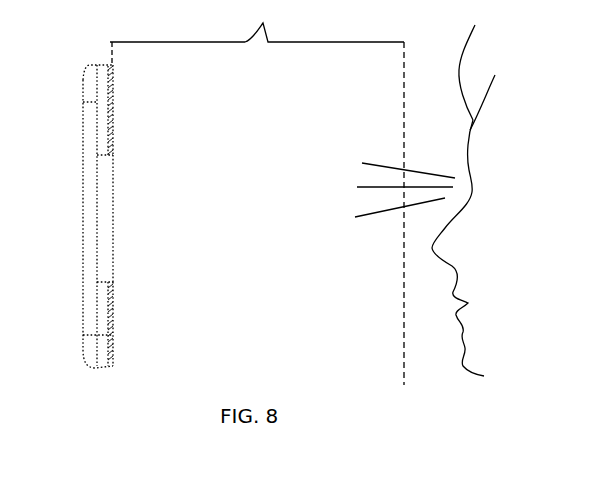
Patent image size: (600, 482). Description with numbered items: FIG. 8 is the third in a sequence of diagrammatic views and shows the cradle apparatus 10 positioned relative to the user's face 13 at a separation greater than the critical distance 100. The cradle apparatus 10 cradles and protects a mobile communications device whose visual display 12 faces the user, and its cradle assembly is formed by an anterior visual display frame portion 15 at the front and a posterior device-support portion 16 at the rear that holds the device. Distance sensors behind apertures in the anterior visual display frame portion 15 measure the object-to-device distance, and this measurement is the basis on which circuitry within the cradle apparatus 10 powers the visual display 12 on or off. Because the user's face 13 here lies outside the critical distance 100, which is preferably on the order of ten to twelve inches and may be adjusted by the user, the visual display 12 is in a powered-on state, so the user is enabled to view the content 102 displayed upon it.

The cradle apparatus 10 is at (83, 80).
The visual display 12 is at (112, 127).
The user's face 13 is at (463, 188).
The anterior visual display frame portion 15 is at (102, 355).
The posterior device-support portion 16 is at (90, 310).
The critical distance 100 is at (263, 23).
The content 102 is at (385, 155).